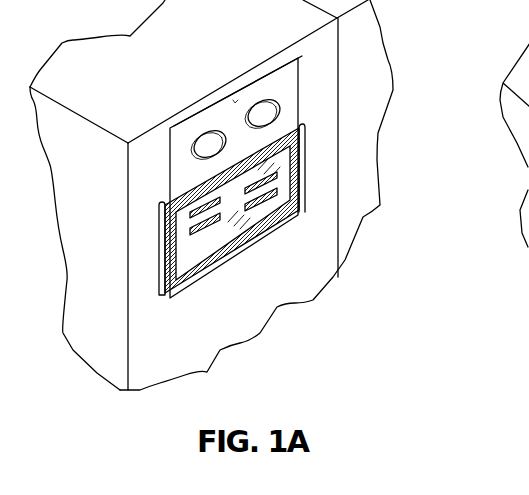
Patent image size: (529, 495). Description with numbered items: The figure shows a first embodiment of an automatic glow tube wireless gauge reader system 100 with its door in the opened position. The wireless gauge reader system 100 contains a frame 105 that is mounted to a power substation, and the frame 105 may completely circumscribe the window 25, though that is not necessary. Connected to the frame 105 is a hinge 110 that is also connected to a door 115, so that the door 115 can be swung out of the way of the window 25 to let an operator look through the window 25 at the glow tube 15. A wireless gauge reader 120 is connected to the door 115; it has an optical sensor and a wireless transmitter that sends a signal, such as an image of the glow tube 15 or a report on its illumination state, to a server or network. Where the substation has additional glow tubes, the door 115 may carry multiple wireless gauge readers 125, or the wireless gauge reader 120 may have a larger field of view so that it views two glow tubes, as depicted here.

The wireless gauge reader system 100 is at (155, 185).
The frame 105 is at (303, 170).
The hinge 110 is at (178, 208).
The door 115 is at (280, 83).
The wireless gauge reader 120 is at (195, 137).
The multiple wireless gauge readers 125 is at (257, 103).
The glow tube 15 is at (213, 230).
The window 25 is at (278, 203).